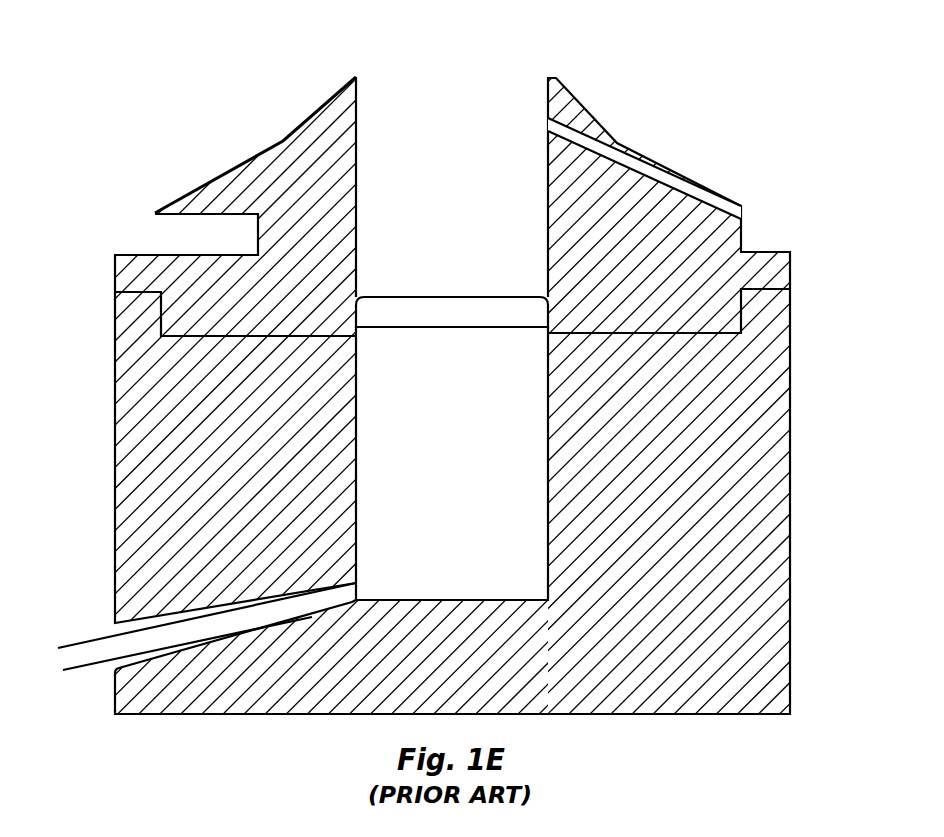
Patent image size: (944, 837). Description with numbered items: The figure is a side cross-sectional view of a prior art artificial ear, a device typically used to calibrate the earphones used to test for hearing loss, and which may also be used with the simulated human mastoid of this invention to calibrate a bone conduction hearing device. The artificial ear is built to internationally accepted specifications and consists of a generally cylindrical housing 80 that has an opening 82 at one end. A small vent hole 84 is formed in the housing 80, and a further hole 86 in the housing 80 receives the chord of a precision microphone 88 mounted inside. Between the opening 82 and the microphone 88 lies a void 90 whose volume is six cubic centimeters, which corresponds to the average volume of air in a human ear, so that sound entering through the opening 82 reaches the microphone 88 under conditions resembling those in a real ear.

The housing 80 is at (778, 339).
The opening 82 is at (498, 89).
The vent hole 84 is at (743, 220).
The hole 86 is at (113, 623).
The precision microphone 88 is at (431, 546).
The void 90 is at (438, 268).